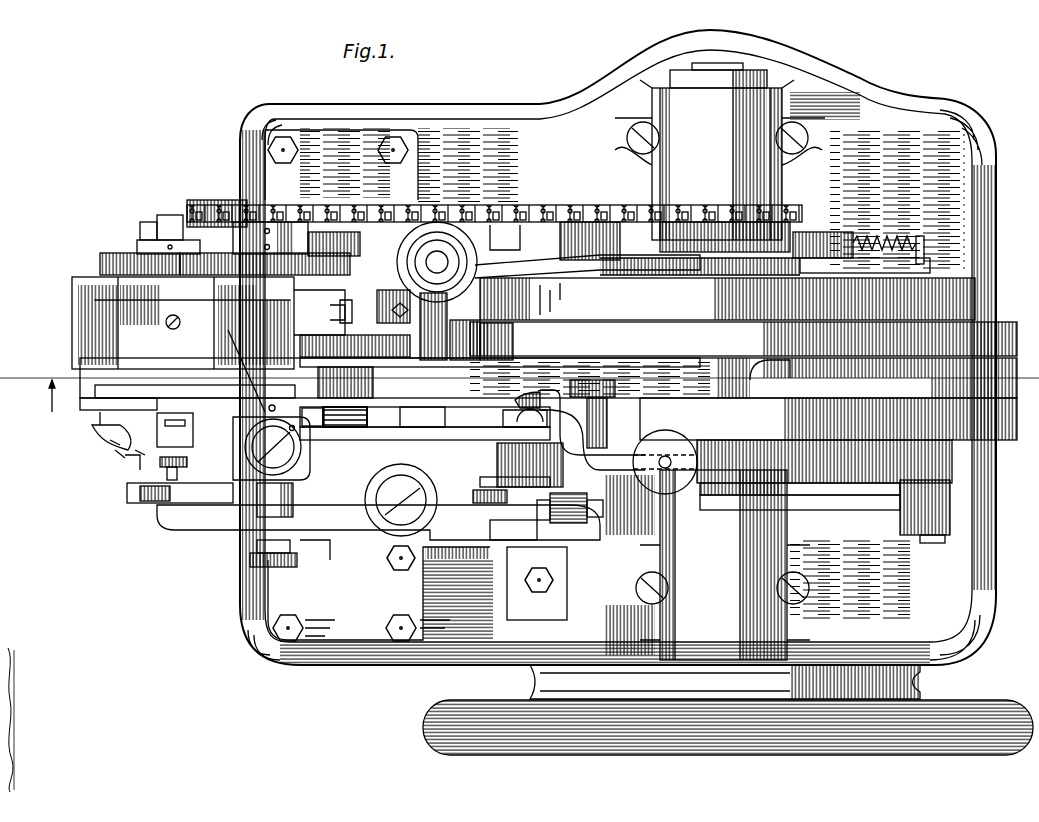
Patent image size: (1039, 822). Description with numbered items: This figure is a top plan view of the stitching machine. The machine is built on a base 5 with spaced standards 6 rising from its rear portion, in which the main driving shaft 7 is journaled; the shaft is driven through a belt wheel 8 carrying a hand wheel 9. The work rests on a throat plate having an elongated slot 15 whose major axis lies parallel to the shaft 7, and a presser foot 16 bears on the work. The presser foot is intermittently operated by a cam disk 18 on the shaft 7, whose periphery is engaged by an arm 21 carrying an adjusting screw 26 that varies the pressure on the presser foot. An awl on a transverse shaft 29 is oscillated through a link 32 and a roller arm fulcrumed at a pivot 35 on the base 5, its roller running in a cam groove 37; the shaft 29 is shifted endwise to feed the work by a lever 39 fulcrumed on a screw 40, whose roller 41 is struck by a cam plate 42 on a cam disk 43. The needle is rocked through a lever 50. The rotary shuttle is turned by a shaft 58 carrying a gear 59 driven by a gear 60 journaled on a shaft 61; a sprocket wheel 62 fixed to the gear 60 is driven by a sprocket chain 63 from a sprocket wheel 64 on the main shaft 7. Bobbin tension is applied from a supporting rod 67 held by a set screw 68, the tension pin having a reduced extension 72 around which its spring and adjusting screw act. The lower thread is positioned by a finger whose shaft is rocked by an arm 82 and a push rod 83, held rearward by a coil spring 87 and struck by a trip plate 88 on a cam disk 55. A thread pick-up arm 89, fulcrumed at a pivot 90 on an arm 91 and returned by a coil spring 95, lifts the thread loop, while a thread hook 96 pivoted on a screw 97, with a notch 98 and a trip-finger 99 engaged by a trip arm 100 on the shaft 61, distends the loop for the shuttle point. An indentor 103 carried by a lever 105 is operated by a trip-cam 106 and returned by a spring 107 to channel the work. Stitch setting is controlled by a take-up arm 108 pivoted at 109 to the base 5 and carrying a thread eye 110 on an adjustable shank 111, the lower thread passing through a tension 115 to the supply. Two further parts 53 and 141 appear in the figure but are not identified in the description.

The base 5 is at (22, 380).
The standards 6 is at (1005, 360).
The main driving shaft 7 is at (722, 68).
The belt wheel 8 is at (530, 681).
The hand wheel 9 is at (428, 730).
The elongated slot 15 is at (112, 412).
The presser foot 16 is at (82, 380).
The cam disk 18 is at (833, 235).
The arm 21 is at (538, 255).
The adjusting screw 26 is at (437, 235).
The transverse shaft 29 is at (163, 500).
The link 32 is at (472, 407).
The pivot 35 is at (935, 543).
The cam groove 37 is at (813, 495).
The lever 39 is at (196, 528).
The screw 40 is at (395, 505).
The roller 41 is at (548, 510).
The cam plate 42 is at (840, 500).
The cam disk 43 is at (760, 445).
The lever 50 is at (743, 339).
The block 53 is at (622, 394).
The cam disk 55 is at (727, 299).
The shaft 58 is at (170, 222).
The gear 59 is at (110, 262).
The gear 60 is at (352, 314).
The shaft 61 is at (265, 505).
The sprocket wheel 62 is at (290, 222).
The sprocket chain 63 is at (572, 200).
The sprocket wheel 64 is at (697, 205).
The supporting rod 67 is at (193, 432).
The set screw 68 is at (176, 318).
The reduced extension 72 is at (187, 462).
The arm 82 is at (140, 245).
The push rod 83 is at (210, 200).
The coil spring 87 is at (500, 240).
The trip plate 88 is at (860, 266).
The thread pick-up arm 89 is at (215, 388).
The pivot 90 is at (372, 393).
The arm 91 is at (310, 370).
The coil spring 95 is at (425, 421).
The thread hook 96 is at (125, 447).
The screw 97 is at (300, 462).
The notch 98 is at (128, 452).
The trip-finger 99 is at (240, 355).
The trip arm 100 is at (318, 429).
The indentor 103 is at (138, 452).
The lever 105 is at (423, 421).
The trip-cam 106 is at (700, 443).
The spring 107 is at (340, 395).
The arm 108 is at (435, 440).
The pivot 109 is at (525, 402).
The thread eye 110 is at (128, 440).
The shank 111 is at (118, 456).
The tension 115 is at (318, 560).
The pin 141 is at (130, 420).